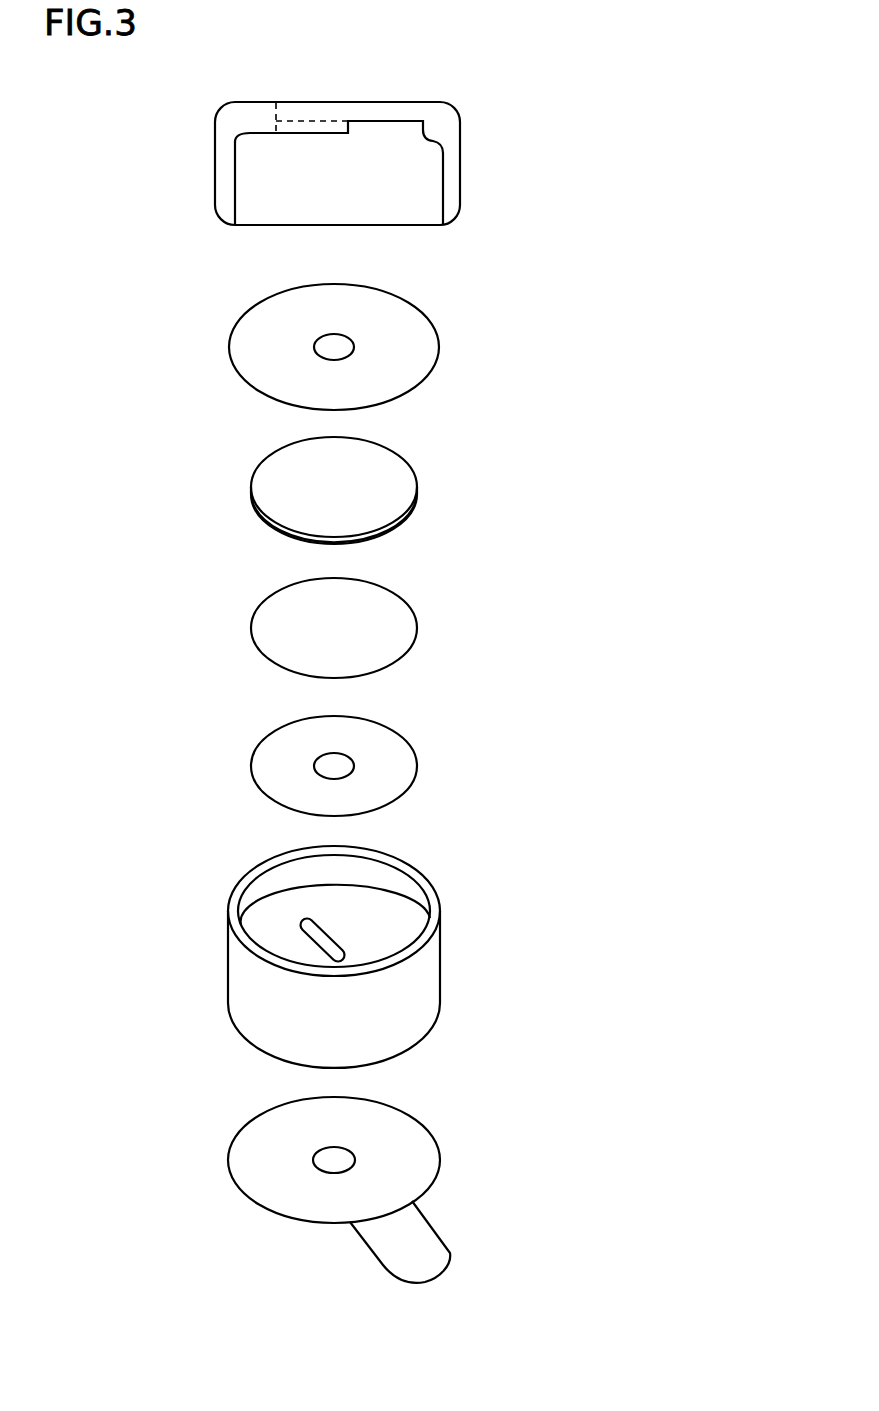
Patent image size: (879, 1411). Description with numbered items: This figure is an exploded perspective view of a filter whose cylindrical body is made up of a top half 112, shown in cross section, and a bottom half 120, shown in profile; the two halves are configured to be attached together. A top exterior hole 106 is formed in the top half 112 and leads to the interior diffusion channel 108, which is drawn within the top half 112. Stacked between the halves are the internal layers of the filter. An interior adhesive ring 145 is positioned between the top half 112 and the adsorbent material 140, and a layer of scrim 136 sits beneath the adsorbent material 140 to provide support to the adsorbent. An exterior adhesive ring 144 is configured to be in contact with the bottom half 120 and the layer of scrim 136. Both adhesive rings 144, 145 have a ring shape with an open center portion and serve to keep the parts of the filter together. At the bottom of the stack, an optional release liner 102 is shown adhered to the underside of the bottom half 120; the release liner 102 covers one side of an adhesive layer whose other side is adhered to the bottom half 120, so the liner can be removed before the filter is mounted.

The release liner 102 is at (426, 1245).
The top exterior hole 106 is at (283, 112).
The interior diffusion channel 108 is at (317, 128).
The top half 112 is at (442, 121).
The bottom half 120 is at (432, 973).
The layer of scrim 136 is at (405, 625).
The adsorbent material 140 is at (397, 480).
The exterior adhesive ring 144 is at (403, 765).
The interior adhesive ring 145 is at (420, 341).